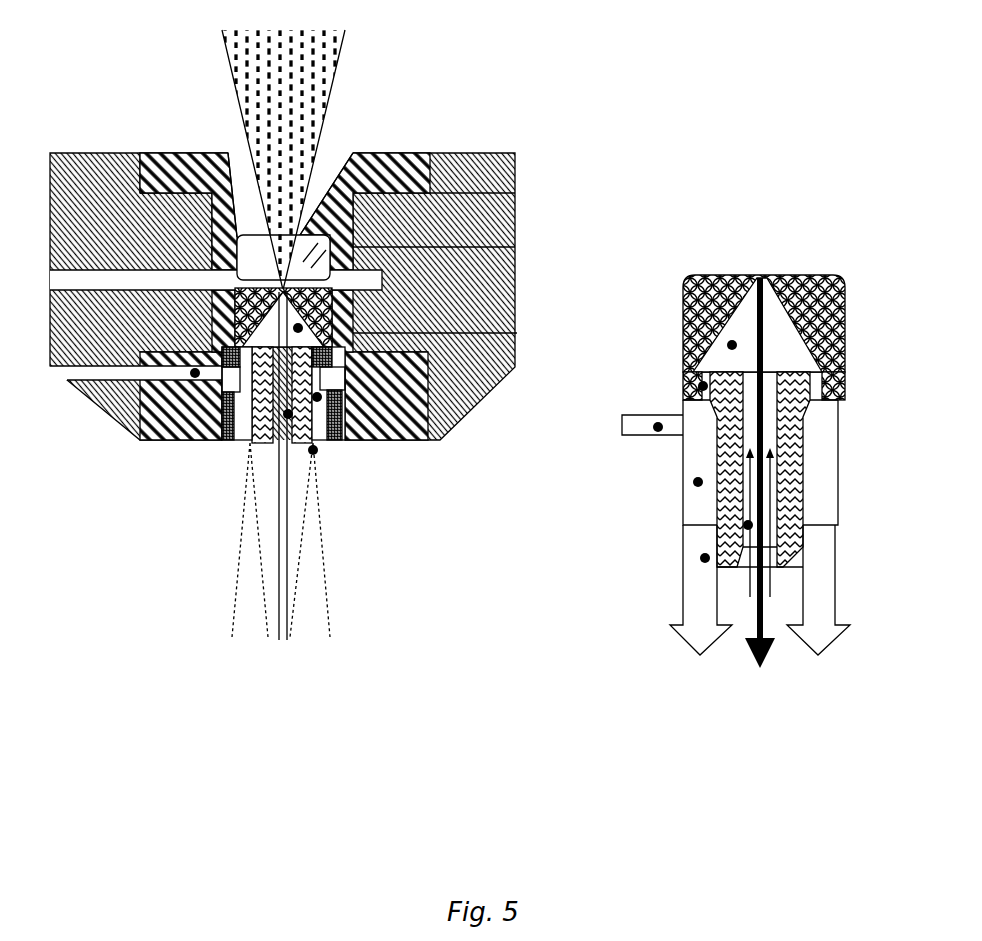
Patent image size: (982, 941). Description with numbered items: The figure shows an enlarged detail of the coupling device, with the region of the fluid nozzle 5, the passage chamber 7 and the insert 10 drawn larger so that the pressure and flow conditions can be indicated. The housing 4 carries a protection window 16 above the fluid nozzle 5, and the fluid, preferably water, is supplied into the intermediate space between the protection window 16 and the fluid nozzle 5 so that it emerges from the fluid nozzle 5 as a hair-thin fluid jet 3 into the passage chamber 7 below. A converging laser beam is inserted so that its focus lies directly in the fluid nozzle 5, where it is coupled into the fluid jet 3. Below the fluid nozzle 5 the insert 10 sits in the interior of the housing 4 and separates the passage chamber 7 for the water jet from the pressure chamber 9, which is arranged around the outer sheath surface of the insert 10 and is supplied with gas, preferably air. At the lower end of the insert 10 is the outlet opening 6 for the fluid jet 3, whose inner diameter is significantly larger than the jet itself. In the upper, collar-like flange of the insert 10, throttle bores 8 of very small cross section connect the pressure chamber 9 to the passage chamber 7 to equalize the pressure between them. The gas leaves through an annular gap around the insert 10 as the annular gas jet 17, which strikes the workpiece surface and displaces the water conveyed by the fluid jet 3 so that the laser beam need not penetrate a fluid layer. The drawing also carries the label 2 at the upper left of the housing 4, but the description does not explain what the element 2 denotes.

The housing 2 is at (78, 158).
The fluid jet 3 is at (278, 548).
The housing 4 is at (517, 172).
The fluid nozzle 5 is at (840, 292).
The outlet opening 6 is at (268, 450).
The passage chamber 7 is at (517, 335).
The throttle bores 8 is at (843, 382).
The pressure chamber 9 is at (190, 440).
The insert 10 is at (232, 440).
The protection window 16 is at (280, 250).
The gas jet 17 is at (250, 585).